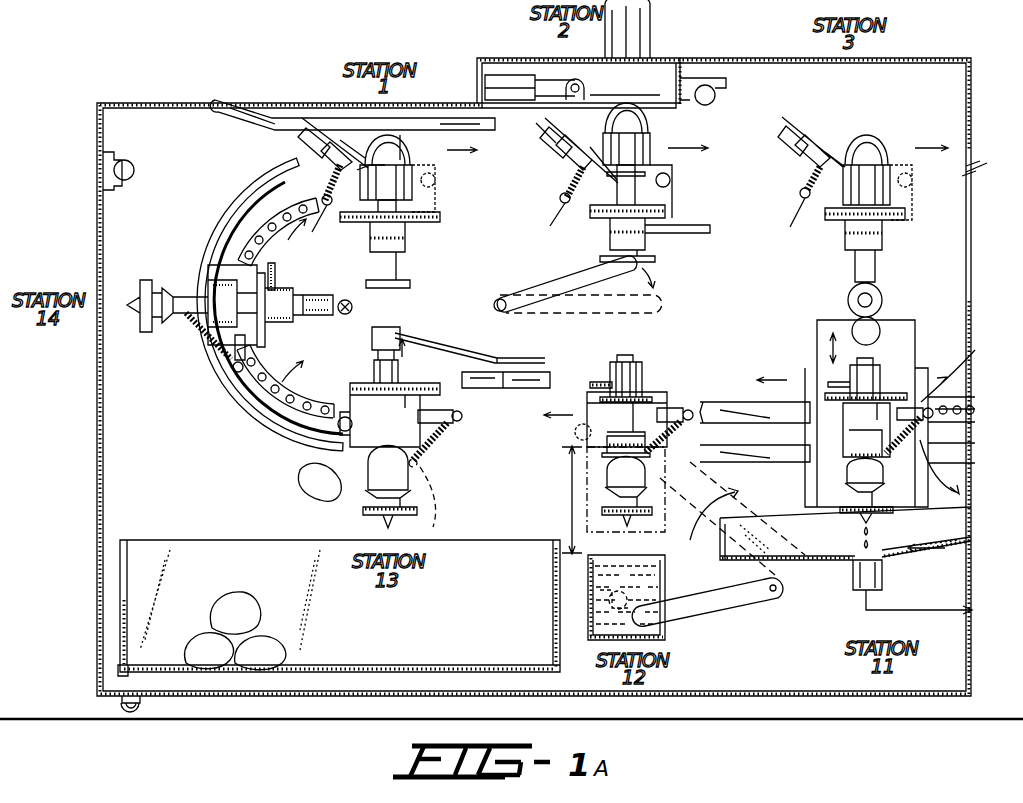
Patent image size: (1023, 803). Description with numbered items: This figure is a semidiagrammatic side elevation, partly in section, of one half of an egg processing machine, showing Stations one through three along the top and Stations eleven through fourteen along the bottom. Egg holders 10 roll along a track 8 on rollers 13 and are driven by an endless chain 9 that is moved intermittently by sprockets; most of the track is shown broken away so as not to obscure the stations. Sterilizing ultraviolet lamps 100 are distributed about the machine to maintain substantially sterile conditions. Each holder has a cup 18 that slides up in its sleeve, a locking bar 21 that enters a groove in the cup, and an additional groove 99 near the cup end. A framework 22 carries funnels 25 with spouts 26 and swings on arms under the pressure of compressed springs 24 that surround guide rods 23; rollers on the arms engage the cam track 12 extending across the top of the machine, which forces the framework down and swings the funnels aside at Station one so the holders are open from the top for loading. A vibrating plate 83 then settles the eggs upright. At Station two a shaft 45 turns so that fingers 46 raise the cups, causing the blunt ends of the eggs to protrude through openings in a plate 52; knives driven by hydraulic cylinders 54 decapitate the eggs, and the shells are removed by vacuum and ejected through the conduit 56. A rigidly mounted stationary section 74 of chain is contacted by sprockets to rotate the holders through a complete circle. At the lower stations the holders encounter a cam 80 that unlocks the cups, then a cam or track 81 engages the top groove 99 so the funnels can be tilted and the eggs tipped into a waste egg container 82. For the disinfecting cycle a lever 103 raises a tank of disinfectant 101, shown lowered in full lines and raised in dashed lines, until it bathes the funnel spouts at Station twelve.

The track 8 is at (272, 212).
The endless chain 9 is at (258, 242).
The egg holder 10 is at (412, 160).
The cam track 12 is at (272, 128).
The rollers 13 is at (436, 181).
The cup 18 is at (372, 337).
The locking bar 21 is at (598, 383).
The framework 22 is at (545, 160).
The guide rods 23 is at (318, 226).
The compressed springs 24 is at (315, 176).
The funnels 25 is at (575, 170).
The spouts 26 is at (545, 135).
The shaft 45 is at (494, 303).
The fingers 46 is at (583, 272).
The plate 52 is at (670, 108).
The hydraulic cylinders 54 is at (510, 77).
The conduit 56 is at (650, 22).
The stationary section of chain 74 is at (940, 392).
The cam 80 is at (523, 390).
The cam or track 81 is at (437, 338).
The waste egg container 82 is at (142, 538).
The vibrating plate 83 is at (372, 290).
The additional groove 99 is at (634, 357).
The sterilizing ultraviolet lamps 100 is at (127, 166).
The tank of disinfectant 101 is at (665, 622).
The lever 103 is at (750, 600).